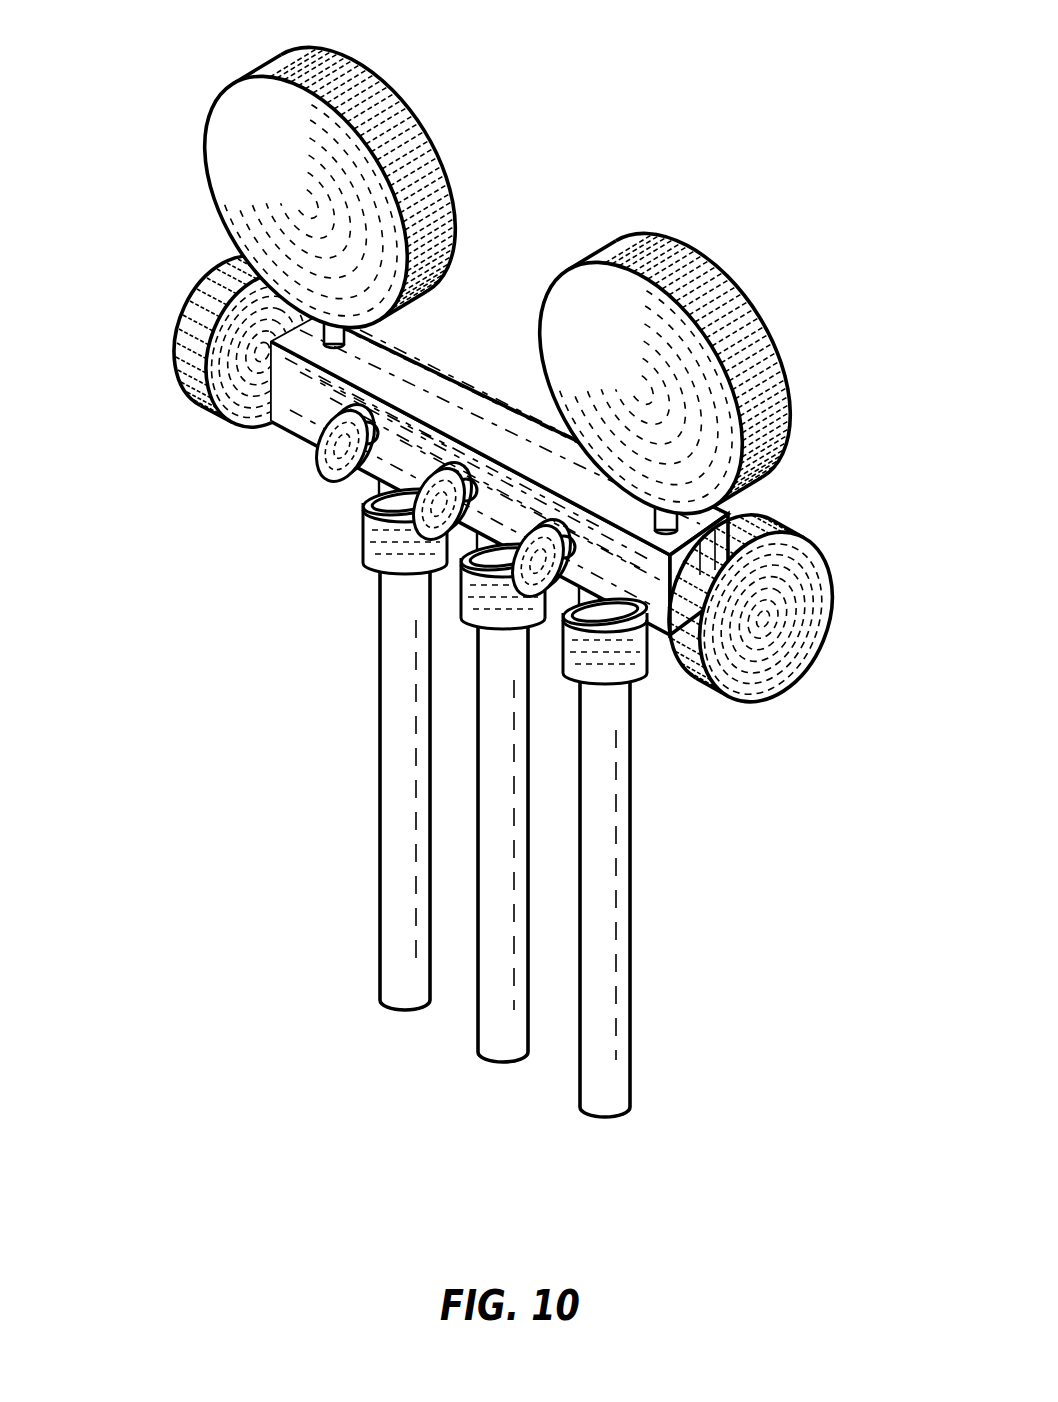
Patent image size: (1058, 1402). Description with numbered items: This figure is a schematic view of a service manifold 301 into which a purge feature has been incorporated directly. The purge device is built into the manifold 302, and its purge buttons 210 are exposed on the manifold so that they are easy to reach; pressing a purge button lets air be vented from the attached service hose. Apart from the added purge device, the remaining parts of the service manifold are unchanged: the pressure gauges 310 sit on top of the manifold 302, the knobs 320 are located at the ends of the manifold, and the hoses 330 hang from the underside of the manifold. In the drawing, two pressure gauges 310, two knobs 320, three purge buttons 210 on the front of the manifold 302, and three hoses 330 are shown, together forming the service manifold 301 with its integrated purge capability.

The service manifold 301 is at (498, 560).
The manifold 302 is at (384, 342).
The pressure gauges 310 is at (349, 74).
The knobs 320 is at (203, 330).
The purge buttons 210 is at (322, 462).
The hoses 330 is at (385, 987).